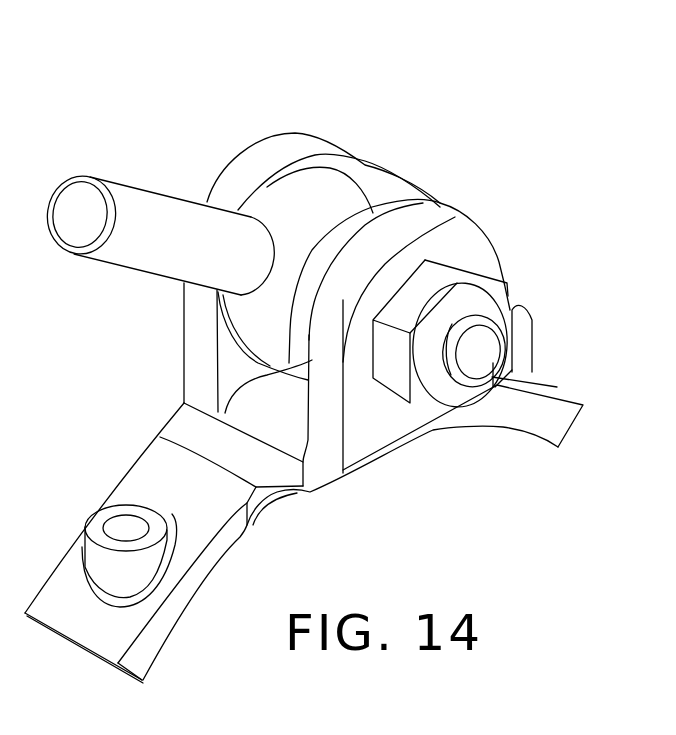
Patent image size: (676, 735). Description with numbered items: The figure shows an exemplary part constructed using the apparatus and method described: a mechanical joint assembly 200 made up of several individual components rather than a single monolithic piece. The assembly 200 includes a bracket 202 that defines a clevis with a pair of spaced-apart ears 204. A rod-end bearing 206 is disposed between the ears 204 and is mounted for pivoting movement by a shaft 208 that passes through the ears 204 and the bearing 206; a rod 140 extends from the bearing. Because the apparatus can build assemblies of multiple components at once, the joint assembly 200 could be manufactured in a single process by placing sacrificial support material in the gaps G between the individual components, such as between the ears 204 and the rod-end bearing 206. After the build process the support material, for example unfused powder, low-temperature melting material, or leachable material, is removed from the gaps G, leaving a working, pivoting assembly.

The handle 140 is at (137, 184).
The mechanical joint assembly 200 is at (336, 72).
The bracket 202 is at (282, 532).
The ears 204 is at (296, 147).
The rod-end bearing 206 is at (380, 185).
The shaft 208 is at (473, 362).
The gaps G is at (438, 200).